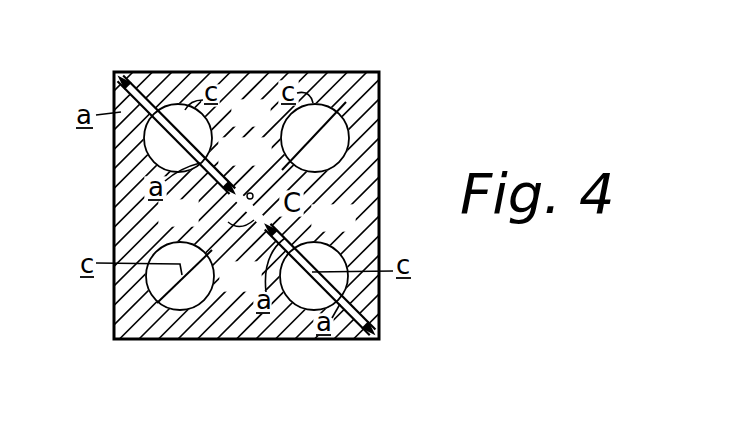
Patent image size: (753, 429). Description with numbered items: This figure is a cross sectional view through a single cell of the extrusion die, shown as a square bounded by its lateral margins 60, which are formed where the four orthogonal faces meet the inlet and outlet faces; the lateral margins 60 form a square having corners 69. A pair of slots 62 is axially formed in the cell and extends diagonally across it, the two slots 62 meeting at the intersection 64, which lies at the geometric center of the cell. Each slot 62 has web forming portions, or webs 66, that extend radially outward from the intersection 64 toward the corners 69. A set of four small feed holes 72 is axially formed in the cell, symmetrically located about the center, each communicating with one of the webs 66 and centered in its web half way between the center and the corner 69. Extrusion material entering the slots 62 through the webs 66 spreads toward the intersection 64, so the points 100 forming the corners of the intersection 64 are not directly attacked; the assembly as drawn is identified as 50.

The manifold block assembly 50 is at (406, 107).
The lateral margins 60 is at (350, 72).
The small feed holes 72 is at (336, 156).
The web forming portions 66 is at (282, 160).
The corners 69 is at (113, 72).
The intersection 64 is at (226, 209).
The slots 62 is at (246, 222).
The points 100 is at (251, 192).